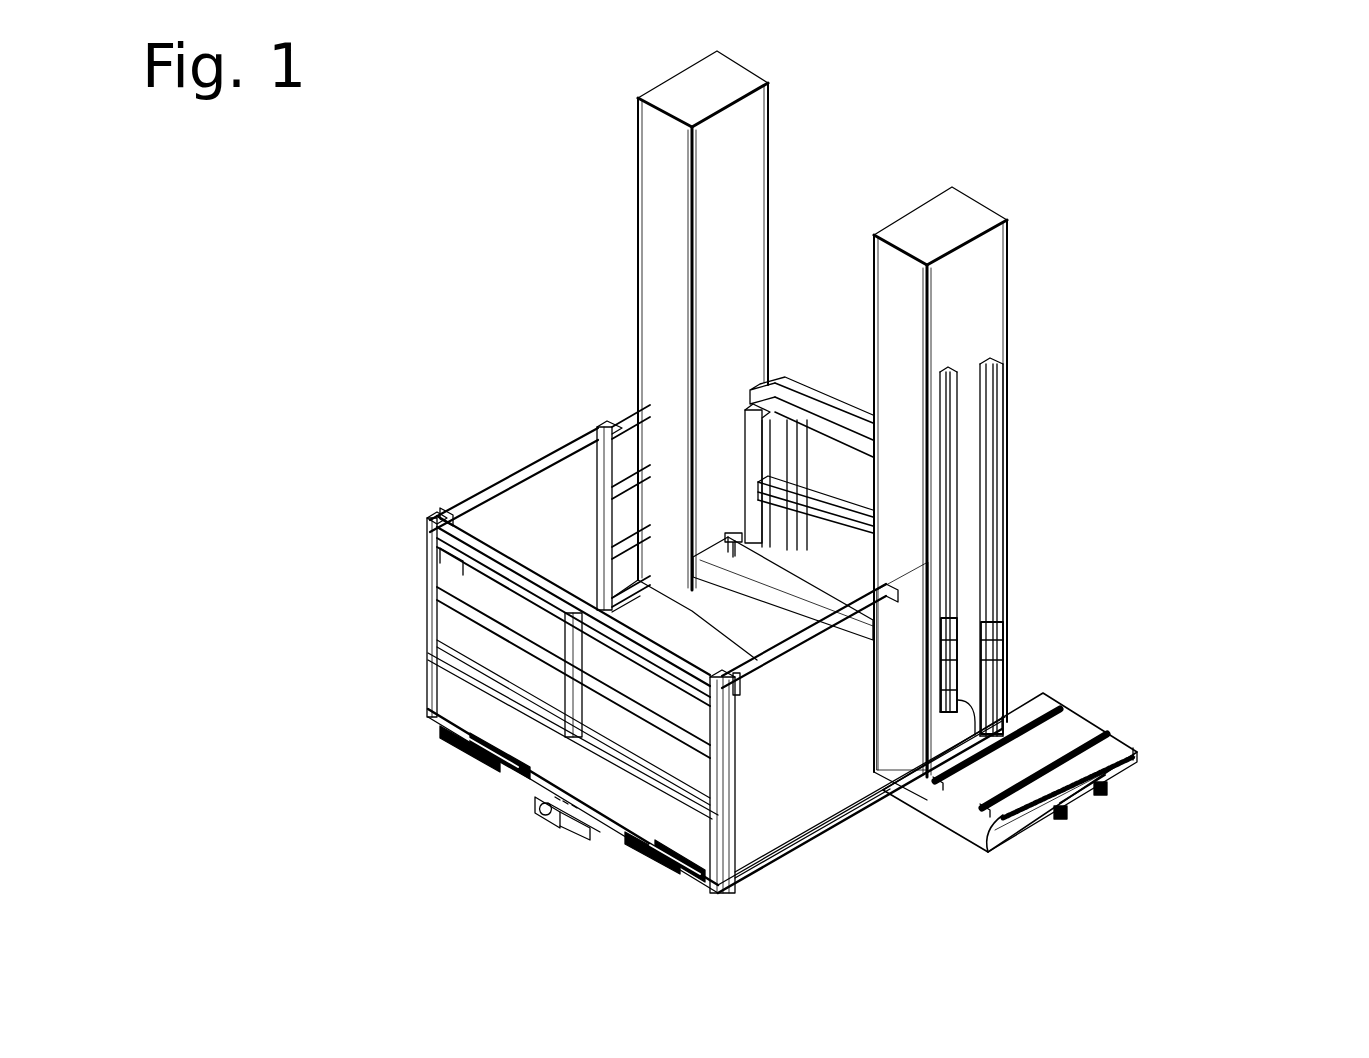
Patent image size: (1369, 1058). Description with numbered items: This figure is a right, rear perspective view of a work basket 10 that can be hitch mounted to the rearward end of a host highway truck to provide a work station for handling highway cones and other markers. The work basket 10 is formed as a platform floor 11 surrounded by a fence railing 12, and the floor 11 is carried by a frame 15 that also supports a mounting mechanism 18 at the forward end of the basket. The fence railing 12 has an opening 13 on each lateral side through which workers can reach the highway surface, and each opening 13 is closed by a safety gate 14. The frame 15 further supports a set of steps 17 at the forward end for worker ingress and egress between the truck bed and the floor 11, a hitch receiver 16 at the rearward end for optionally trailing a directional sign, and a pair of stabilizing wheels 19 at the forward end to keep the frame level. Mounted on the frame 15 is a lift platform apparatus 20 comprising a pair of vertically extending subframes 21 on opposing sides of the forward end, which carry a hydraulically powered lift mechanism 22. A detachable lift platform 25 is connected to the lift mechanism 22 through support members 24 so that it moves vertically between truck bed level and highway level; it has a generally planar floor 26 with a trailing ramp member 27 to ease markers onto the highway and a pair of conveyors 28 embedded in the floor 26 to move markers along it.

The work basket 10 is at (1165, 140).
The platform floor 11 is at (795, 800).
The fence railing 12 is at (490, 574).
The opening 13 is at (481, 446).
The safety gate 14 is at (545, 448).
The frame 15 is at (850, 817).
The hitch receiver 16 is at (550, 813).
The set of steps 17 is at (816, 353).
The mounting mechanism 18 is at (1063, 588).
The stabilizing wheels 19 is at (1005, 679).
The lift platform apparatus 20 is at (1094, 468).
The subframes 21 is at (652, 183).
The lift mechanism 22 is at (1005, 652).
The support members 24 is at (1107, 790).
The lift platform 25 is at (1078, 795).
The floor 26 is at (1057, 740).
The trailing ramp member 27 is at (973, 830).
The conveyors 28 is at (1095, 735).